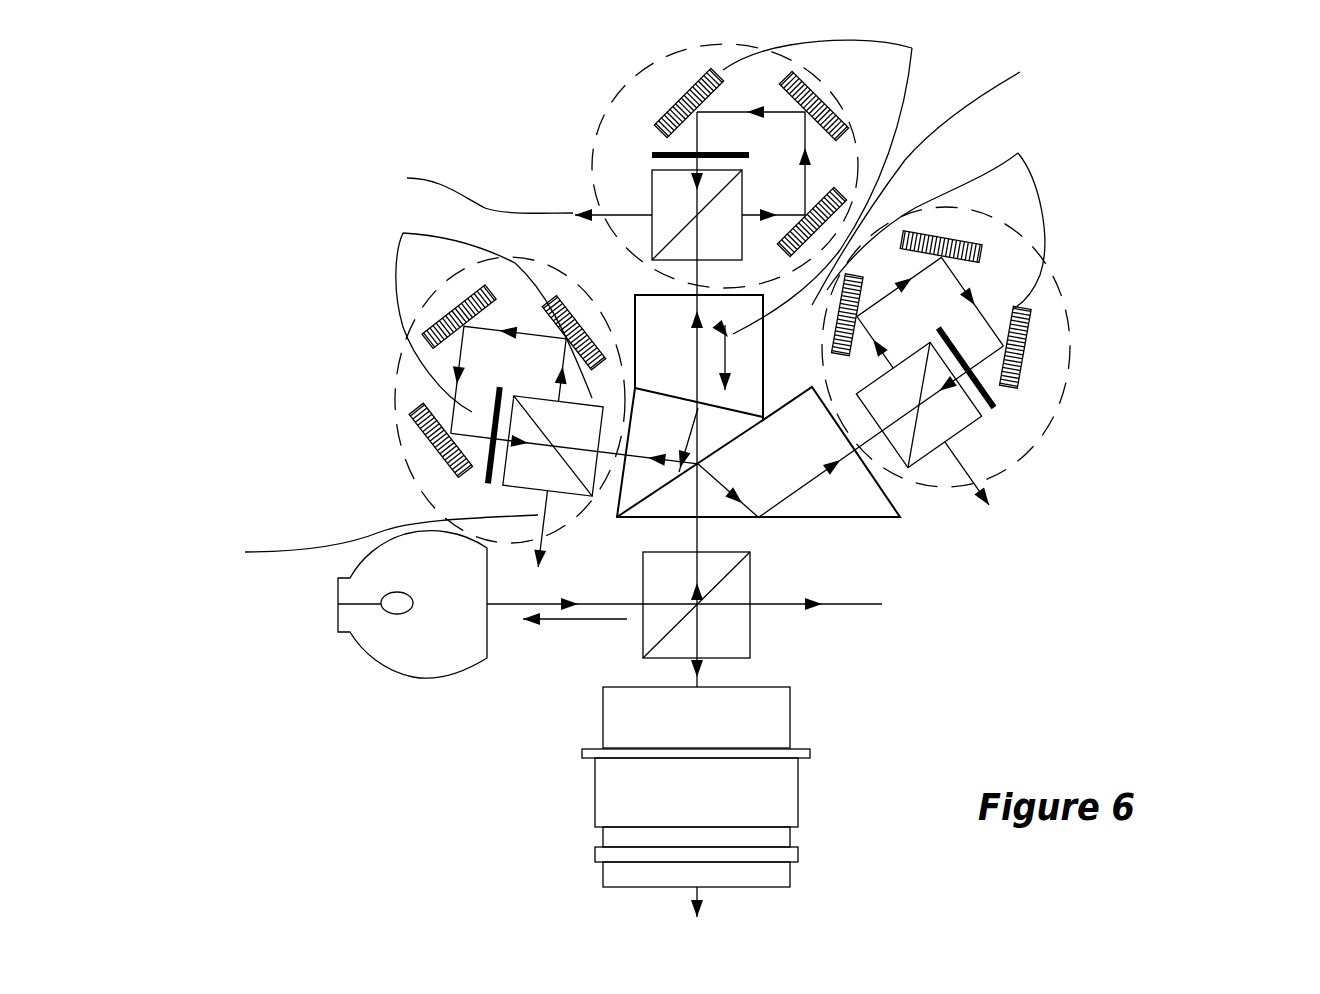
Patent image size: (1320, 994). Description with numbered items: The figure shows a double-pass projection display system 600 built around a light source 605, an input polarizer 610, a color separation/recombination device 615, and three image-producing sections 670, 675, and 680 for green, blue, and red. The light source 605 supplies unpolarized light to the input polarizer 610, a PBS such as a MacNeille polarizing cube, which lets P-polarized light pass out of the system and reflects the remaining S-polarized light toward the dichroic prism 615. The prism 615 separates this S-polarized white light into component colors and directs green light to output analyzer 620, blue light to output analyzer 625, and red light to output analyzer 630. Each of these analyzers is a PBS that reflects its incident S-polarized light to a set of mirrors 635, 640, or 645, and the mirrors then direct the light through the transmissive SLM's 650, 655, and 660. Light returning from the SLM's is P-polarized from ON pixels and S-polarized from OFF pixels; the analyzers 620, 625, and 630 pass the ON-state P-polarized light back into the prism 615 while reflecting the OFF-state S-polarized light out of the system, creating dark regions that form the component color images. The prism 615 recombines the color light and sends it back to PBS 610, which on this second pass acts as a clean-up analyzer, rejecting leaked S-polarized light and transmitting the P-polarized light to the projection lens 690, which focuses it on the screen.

The double-pass projection display system 600 is at (1176, 222).
The light source 605 is at (407, 645).
The input polarizer 610 is at (643, 578).
The color separation/recombination device 615 is at (822, 519).
The output analyzer 620 is at (652, 170).
The output analyzer 625 is at (498, 483).
The output analyzer 630 is at (983, 417).
The set of mirrors 635 is at (826, 112).
The set of mirrors 640 is at (441, 280).
The set of mirrors 645 is at (940, 240).
The transmissive SLM 650 is at (651, 154).
The transmissive SLM 655 is at (483, 475).
The transmissive SLM 660 is at (992, 406).
The image-producing section 670 is at (699, 172).
The image-producing section 675 is at (481, 395).
The image-producing section 680 is at (910, 372).
The projection lens 690 is at (595, 825).